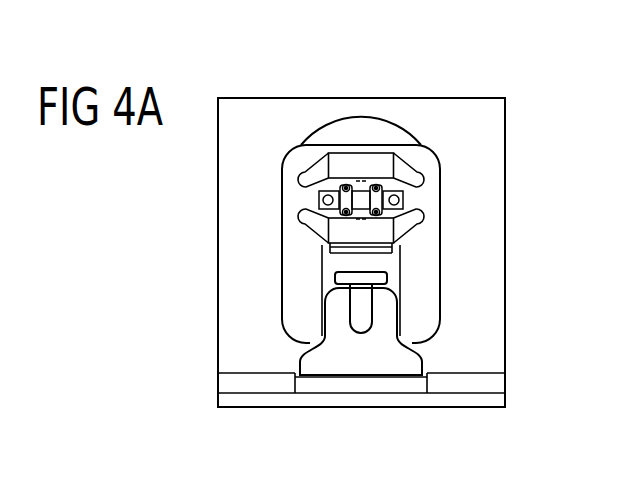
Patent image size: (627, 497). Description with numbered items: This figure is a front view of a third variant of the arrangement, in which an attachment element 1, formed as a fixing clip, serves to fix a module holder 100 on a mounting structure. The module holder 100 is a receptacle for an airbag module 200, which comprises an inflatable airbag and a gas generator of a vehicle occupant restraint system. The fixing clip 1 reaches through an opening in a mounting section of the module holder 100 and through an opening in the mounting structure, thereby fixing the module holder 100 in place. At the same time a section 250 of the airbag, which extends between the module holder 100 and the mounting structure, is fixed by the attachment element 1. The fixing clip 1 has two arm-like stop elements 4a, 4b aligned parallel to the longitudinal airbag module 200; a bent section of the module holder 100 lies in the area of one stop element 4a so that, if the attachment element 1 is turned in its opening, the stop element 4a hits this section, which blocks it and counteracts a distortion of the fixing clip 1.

The attachment element 1 is at (416, 165).
The stop element 4a is at (357, 163).
The stop element 4b is at (368, 235).
The module holder 100 is at (433, 198).
The airbag module 200 is at (492, 348).
The section of the airbag 250 is at (369, 131).